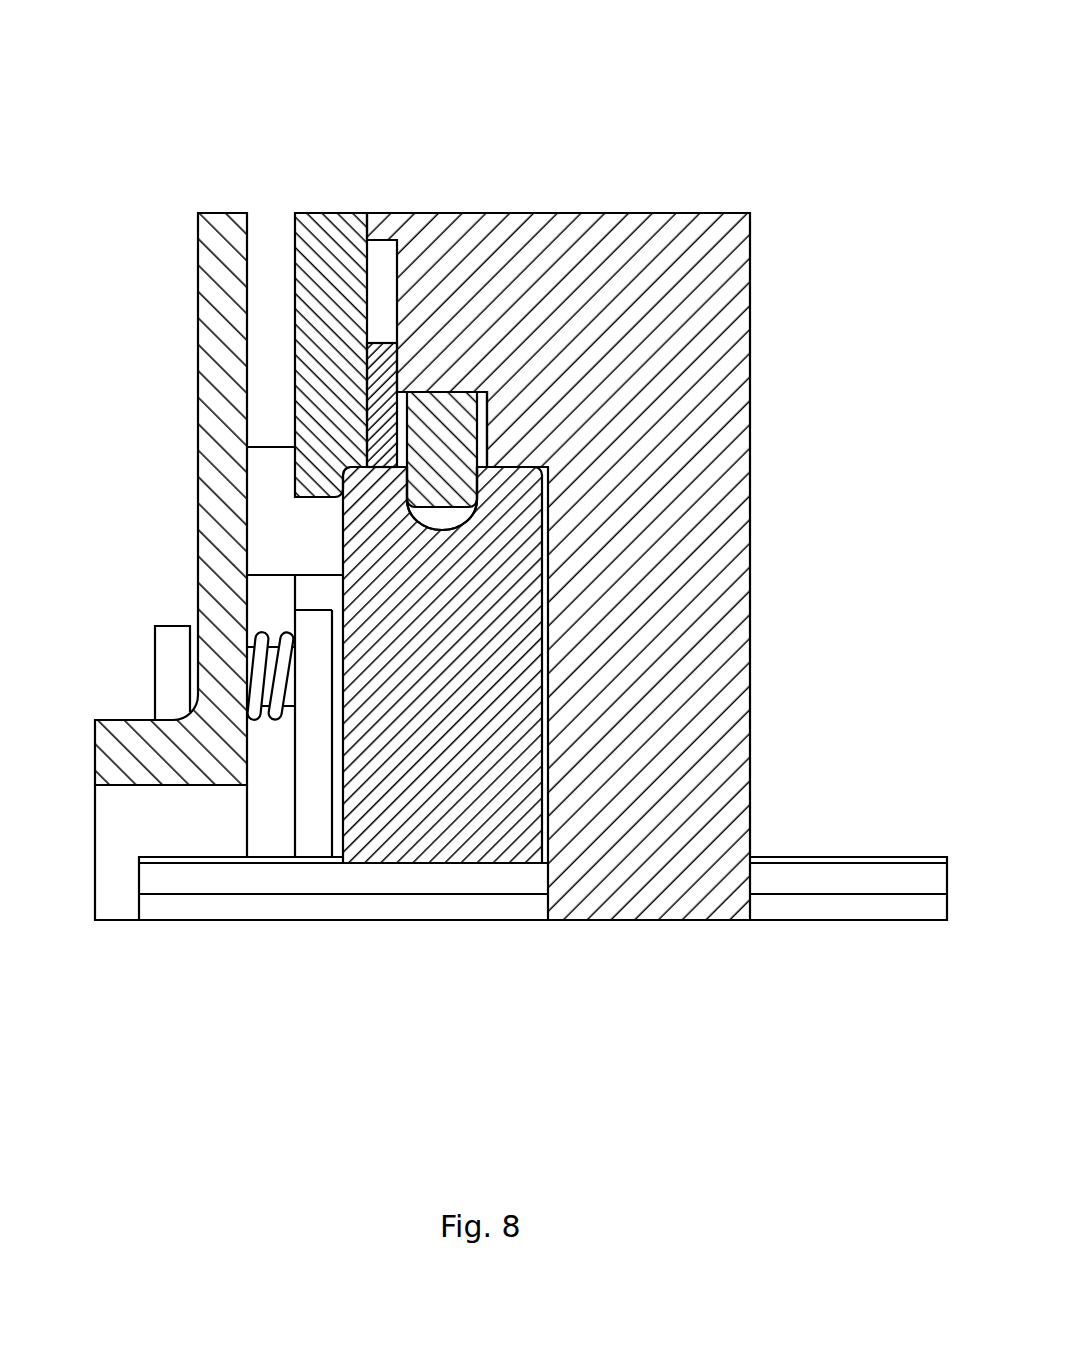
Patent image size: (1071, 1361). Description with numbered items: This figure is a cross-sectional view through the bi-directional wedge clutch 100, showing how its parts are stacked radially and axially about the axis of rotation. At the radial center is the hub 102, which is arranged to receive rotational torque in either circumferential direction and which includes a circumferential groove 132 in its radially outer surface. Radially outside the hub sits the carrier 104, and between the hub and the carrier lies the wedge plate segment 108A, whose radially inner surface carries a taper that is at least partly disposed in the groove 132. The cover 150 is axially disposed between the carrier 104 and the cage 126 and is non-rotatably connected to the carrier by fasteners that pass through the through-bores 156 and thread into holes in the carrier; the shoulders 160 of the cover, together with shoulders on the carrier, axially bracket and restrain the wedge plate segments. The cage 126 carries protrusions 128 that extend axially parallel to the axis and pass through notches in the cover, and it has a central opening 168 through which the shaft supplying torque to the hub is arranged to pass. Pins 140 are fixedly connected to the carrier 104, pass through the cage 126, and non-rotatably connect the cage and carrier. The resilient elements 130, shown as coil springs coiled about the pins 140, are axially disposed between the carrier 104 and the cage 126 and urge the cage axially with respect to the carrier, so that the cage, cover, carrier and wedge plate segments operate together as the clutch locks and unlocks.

The bi-directional wedge clutch 100 is at (697, 56).
The hub 102 is at (550, 634).
The carrier 104 is at (637, 208).
The wedge plate segment 108A is at (447, 407).
The cage 126 is at (218, 208).
The protrusions 128 is at (273, 445).
The resilient elements 130 is at (262, 632).
The circumferential groove 132 is at (445, 517).
The pins 140 is at (170, 620).
The cover 150 is at (323, 208).
The through-bores 156 is at (497, 423).
The shoulders 160 is at (383, 340).
The central opening 168 is at (123, 823).